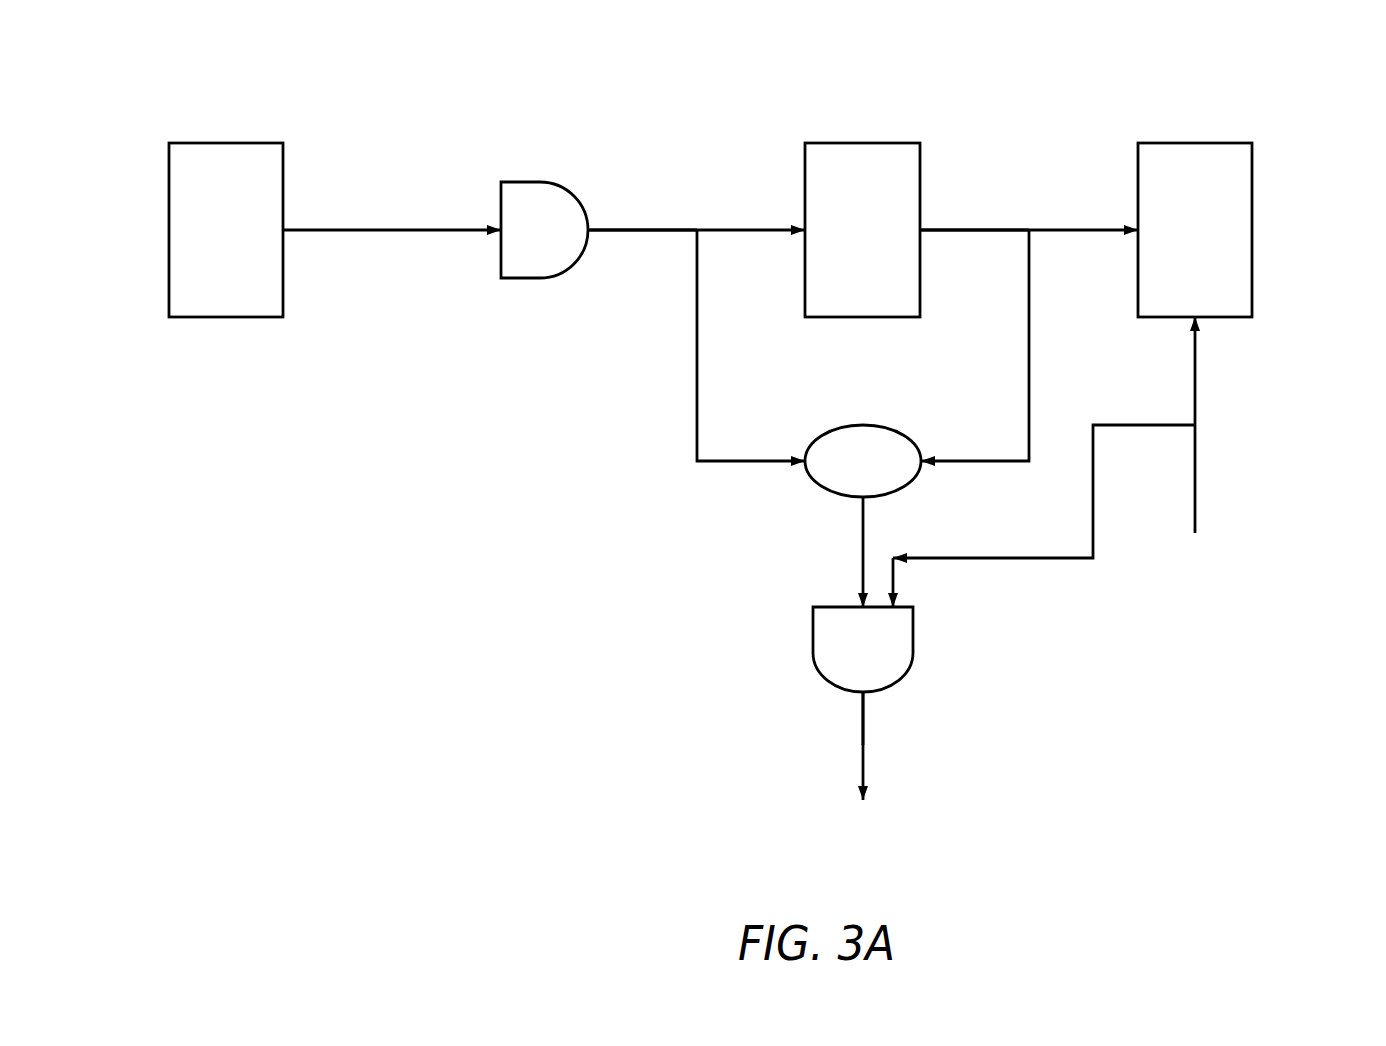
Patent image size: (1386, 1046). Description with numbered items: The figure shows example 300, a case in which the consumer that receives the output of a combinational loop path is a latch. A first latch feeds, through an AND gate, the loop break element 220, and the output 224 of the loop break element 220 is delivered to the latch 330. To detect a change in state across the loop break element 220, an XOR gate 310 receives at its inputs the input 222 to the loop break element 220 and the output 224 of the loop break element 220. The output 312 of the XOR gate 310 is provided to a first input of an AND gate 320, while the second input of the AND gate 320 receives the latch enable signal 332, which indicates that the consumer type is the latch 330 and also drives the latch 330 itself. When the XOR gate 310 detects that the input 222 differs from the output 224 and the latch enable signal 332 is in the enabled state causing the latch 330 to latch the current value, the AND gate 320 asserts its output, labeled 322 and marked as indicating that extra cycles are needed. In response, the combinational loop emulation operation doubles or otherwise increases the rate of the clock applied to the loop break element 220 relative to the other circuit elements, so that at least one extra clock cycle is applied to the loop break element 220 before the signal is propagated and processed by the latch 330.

The example 300 is at (181, 76).
The loop break element 220 is at (862, 142).
The input 222 is at (672, 229).
The output 224 is at (1000, 229).
The XOR gate 310 is at (862, 425).
The output 312 is at (858, 545).
The AND gate 320 is at (812, 637).
The need extra cycles output signal 322 is at (858, 730).
The latch 330 is at (1193, 142).
The latch enable signal 332 is at (1148, 424).